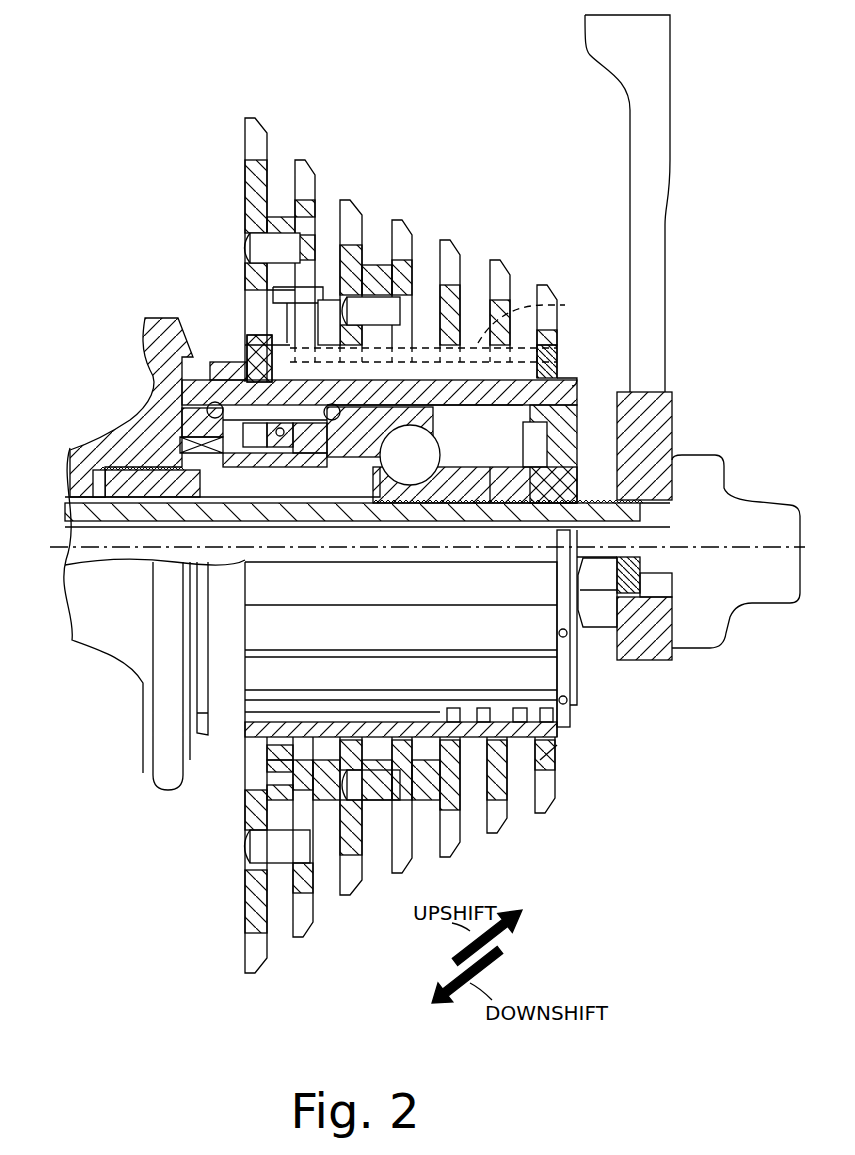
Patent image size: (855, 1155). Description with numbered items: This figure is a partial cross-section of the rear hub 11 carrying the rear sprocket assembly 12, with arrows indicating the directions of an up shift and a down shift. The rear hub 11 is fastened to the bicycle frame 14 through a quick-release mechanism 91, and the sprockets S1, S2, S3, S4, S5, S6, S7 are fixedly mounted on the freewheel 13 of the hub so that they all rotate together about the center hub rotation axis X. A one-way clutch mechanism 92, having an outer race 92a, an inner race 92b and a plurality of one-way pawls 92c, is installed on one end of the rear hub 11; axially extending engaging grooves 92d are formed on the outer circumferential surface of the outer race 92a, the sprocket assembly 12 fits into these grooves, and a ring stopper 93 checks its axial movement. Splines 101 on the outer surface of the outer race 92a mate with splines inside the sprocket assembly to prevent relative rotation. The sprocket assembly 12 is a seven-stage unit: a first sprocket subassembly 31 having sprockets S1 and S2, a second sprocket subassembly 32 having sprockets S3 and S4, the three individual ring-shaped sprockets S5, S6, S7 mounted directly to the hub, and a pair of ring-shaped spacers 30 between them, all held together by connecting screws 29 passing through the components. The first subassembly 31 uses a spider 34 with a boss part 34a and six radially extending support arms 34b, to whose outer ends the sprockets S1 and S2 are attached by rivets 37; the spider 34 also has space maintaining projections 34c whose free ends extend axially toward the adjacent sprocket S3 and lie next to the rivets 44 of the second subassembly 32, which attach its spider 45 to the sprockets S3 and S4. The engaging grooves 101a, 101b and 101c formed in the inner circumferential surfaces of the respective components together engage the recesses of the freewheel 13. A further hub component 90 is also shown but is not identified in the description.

The rear hub 11 is at (77, 447).
The rear sprocket assembly 12 is at (432, 132).
The freewheel 13 is at (592, 661).
The bicycle frame 14 is at (670, 163).
The connecting screws 29 is at (335, 345).
The ring-shaped spacers 30 is at (565, 305).
The first sprocket subassembly 31 is at (277, 918).
The second sprocket subassembly 32 is at (378, 853).
The spider 34 is at (95, 947).
The boss part 34a is at (265, 765).
The sprocket support arms 34b is at (280, 790).
The space maintaining projections 34c is at (320, 300).
The rivets 37 is at (257, 248).
The rivets 44 is at (425, 800).
The spider 45 is at (380, 800).
The hub flange 90 is at (140, 330).
The quick-release mechanism 91 is at (753, 598).
The one-way clutch mechanism 92 is at (233, 347).
The outer race 92a is at (223, 363).
The inner race 92b is at (190, 425).
The one-way pawls 92c is at (300, 470).
The engaging grooves 92d is at (547, 670).
The ring stopper 93 is at (578, 378).
The splines 101 is at (322, 700).
The engaging grooves 101a is at (293, 715).
The engaging grooves 101b is at (543, 713).
The engaging grooves 101c is at (540, 760).
The sprocket S1 is at (257, 118).
The sprocket S2 is at (306, 160).
The sprocket S3 is at (352, 200).
The sprocket S4 is at (400, 220).
The sprocket S5 is at (448, 240).
The sprocket S6 is at (498, 260).
The sprocket S7 is at (545, 285).
The center hub rotation axis X is at (760, 548).